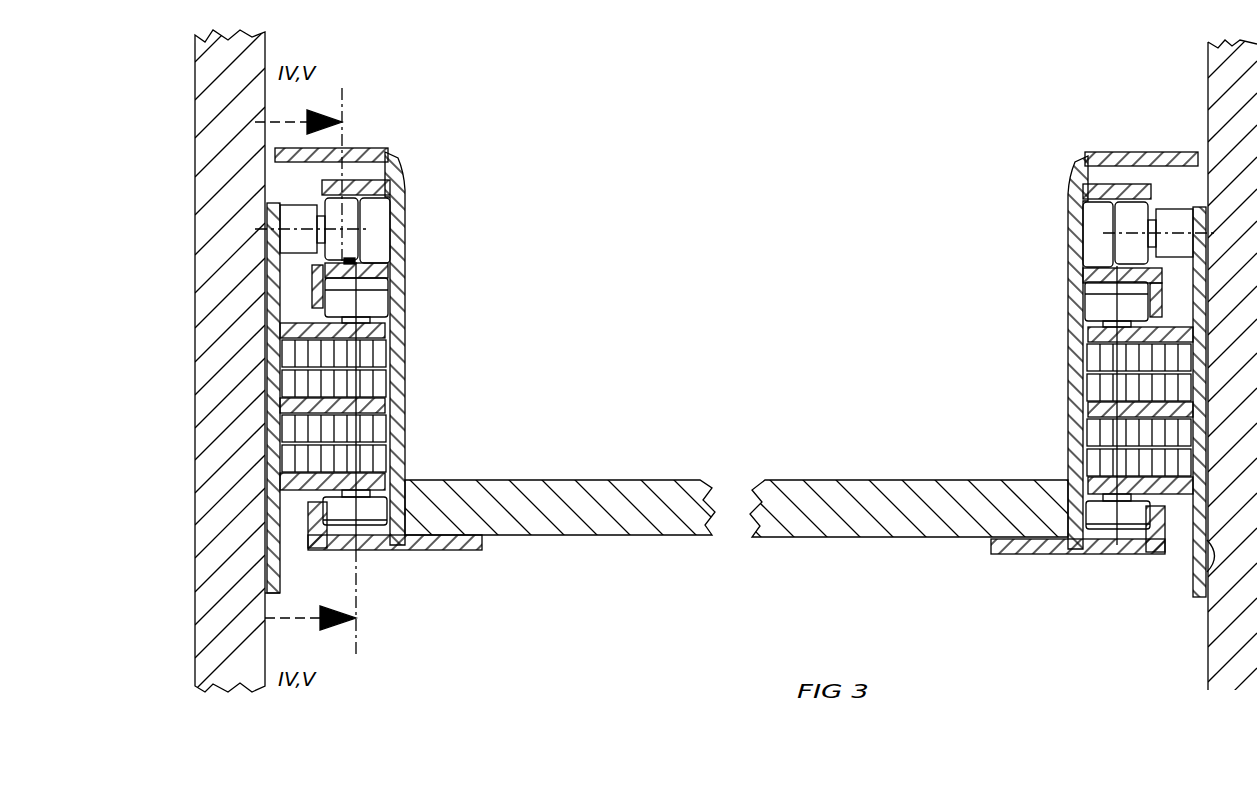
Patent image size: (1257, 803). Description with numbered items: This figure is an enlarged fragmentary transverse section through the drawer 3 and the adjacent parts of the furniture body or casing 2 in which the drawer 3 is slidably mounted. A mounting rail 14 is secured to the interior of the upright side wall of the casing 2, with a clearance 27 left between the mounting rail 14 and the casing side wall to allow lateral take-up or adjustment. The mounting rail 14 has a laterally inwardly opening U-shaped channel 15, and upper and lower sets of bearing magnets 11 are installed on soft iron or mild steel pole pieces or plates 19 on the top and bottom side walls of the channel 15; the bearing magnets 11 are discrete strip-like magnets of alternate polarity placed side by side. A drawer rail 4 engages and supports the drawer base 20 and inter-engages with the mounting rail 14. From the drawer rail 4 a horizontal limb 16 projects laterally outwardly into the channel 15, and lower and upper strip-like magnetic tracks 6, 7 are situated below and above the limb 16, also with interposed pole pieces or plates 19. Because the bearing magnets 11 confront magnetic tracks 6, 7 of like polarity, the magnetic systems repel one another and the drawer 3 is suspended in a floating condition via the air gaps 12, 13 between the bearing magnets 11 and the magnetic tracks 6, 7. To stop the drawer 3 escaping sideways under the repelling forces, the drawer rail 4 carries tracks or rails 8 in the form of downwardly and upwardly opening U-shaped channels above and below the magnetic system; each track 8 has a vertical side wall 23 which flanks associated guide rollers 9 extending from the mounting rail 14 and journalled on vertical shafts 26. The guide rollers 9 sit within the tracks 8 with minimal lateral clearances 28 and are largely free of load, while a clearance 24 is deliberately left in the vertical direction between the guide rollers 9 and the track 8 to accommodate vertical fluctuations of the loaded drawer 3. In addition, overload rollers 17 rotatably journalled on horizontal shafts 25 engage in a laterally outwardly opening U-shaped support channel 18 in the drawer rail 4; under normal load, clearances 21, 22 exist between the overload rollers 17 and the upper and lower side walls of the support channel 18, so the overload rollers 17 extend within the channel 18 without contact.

The casing 2 is at (223, 178).
The drawer 3 is at (640, 550).
The drawer rail 4 is at (398, 313).
The lower magnetic track 6 is at (385, 430).
The upper magnetic track 7 is at (380, 390).
The track 8 is at (378, 270).
The guide roller 9 is at (378, 300).
The bearing magnet 11 is at (385, 342).
The air gap 12 is at (383, 362).
The air gap 13 is at (387, 445).
The mounting rail 14 is at (274, 310).
The U-shaped channel 15 is at (258, 403).
The limb 16 is at (377, 407).
The overload roller 17 is at (347, 222).
The support channel 18 is at (374, 243).
The pole piece 19 is at (280, 340).
The drawer base 20 is at (690, 512).
The clearance 21 is at (378, 150).
The clearance 22 is at (320, 250).
The vertical side wall 23 is at (313, 290).
The clearance 24 is at (1102, 287).
The horizontal shaft 25 is at (292, 220).
The vertical shaft 26 is at (278, 562).
The clearance 27 is at (1197, 590).
The lateral clearance 28 is at (1080, 518).